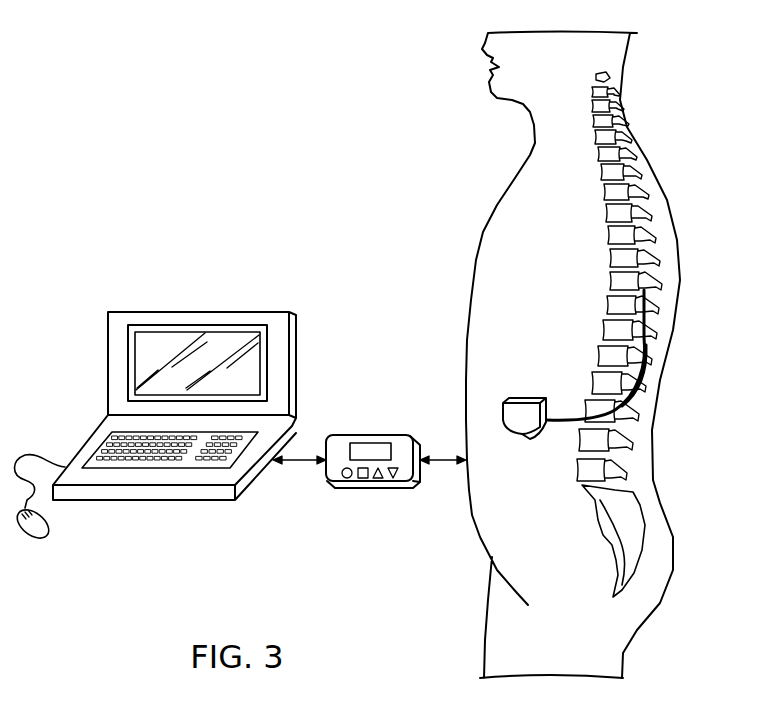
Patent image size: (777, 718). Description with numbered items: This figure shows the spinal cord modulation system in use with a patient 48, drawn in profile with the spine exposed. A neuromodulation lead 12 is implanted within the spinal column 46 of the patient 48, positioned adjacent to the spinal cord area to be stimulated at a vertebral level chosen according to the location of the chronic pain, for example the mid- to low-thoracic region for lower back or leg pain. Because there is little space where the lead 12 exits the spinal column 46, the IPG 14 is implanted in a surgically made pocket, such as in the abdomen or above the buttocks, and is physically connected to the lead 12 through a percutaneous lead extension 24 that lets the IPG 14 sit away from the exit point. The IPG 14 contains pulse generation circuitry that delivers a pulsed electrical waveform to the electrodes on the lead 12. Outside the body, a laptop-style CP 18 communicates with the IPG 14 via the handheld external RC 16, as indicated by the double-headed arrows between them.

The implantable modulation lead 12 is at (657, 317).
The IPG 14 is at (522, 428).
The external RC 16 is at (392, 414).
The CP 18 is at (190, 302).
The percutaneous lead extension 24 is at (642, 379).
The spinal column 46 is at (612, 292).
The patient 48 is at (478, 242).